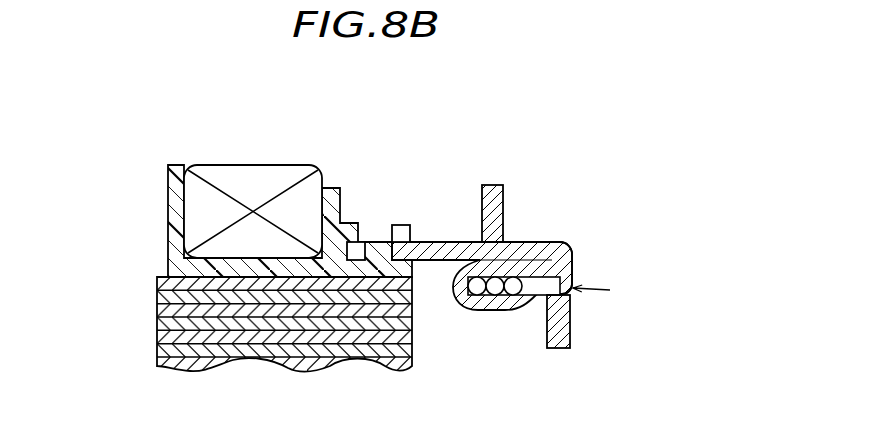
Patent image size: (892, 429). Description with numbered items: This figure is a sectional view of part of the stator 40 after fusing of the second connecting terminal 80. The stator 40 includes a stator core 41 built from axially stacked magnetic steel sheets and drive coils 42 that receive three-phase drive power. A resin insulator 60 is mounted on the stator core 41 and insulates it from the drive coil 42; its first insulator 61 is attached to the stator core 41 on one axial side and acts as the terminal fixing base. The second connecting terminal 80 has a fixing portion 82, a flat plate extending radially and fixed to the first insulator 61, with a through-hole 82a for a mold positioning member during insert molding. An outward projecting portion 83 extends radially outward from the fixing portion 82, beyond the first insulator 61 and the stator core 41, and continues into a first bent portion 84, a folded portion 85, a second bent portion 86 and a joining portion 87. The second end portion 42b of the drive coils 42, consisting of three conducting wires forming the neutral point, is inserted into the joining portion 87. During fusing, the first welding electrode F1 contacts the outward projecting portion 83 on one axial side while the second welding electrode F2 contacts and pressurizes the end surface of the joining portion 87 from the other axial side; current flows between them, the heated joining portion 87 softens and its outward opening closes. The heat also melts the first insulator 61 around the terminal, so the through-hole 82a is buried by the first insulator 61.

The stator 40 is at (105, 130).
The stator core 41 is at (157, 322).
The drive coil 42 is at (252, 177).
The second end portion 42b is at (506, 297).
The insulator 60 is at (227, 221).
The first insulator 61 is at (168, 228).
The second connecting terminal 80 is at (592, 218).
The fixing portion 82 is at (360, 244).
The through-hole 82a is at (383, 244).
The outward projecting portion 83 is at (445, 242).
The first bent portion 84 is at (570, 252).
The folded portion 85 is at (518, 262).
The second bent portion 86 is at (452, 282).
The joining portion 87 is at (607, 294).
The first welding electrode F1 is at (568, 331).
The second welding electrode F2 is at (500, 205).